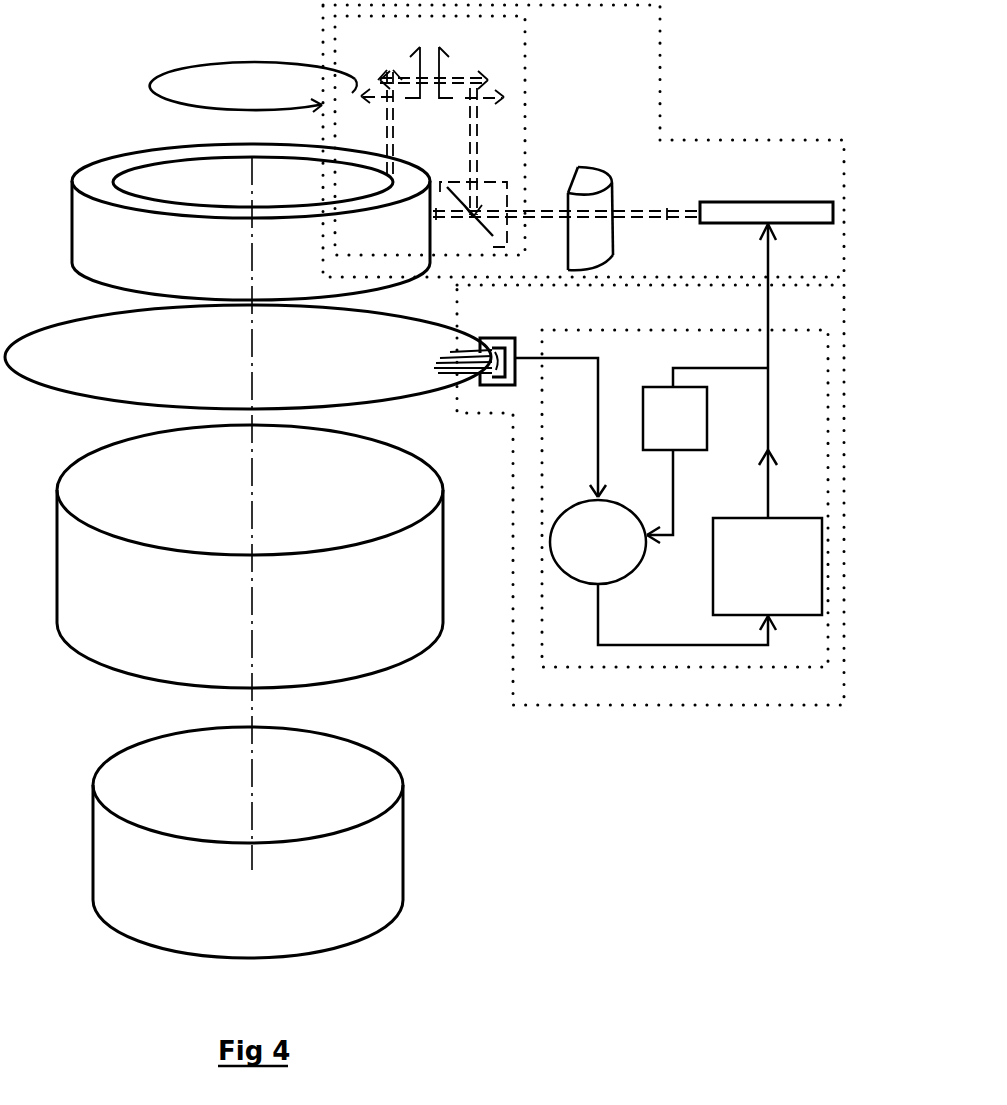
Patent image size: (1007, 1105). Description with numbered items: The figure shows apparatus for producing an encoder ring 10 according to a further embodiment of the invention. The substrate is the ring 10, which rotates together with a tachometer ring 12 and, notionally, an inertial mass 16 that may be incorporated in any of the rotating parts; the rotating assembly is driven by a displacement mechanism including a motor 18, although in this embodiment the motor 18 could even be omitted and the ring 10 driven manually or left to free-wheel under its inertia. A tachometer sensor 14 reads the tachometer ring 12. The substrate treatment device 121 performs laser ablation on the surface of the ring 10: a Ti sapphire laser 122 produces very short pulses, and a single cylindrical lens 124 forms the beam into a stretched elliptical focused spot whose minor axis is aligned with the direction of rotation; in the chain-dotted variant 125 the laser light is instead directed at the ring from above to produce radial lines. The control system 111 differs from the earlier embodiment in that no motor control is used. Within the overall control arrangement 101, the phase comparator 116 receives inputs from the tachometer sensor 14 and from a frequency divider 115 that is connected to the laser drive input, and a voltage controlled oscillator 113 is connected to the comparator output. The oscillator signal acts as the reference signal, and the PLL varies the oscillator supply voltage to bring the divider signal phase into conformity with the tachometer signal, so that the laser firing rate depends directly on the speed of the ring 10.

The encoder ring 10 is at (186, 281).
The tachometer ring 12 is at (200, 382).
The tachometer sensor 14 is at (493, 386).
The inertial mass 16 is at (206, 516).
The motor 18 is at (218, 821).
The measuring device 101 is at (562, 646).
The control system 111 is at (690, 682).
The voltage controlled oscillator 113 is at (786, 581).
The frequency divider 115 is at (698, 434).
The phase comparator 116 is at (625, 556).
The substrate treatment device 121 is at (625, 107).
The Ti sapphire laser 122 is at (716, 217).
The cylindrical lens 124 is at (585, 243).
The chain-dotted variant 125 is at (503, 58).